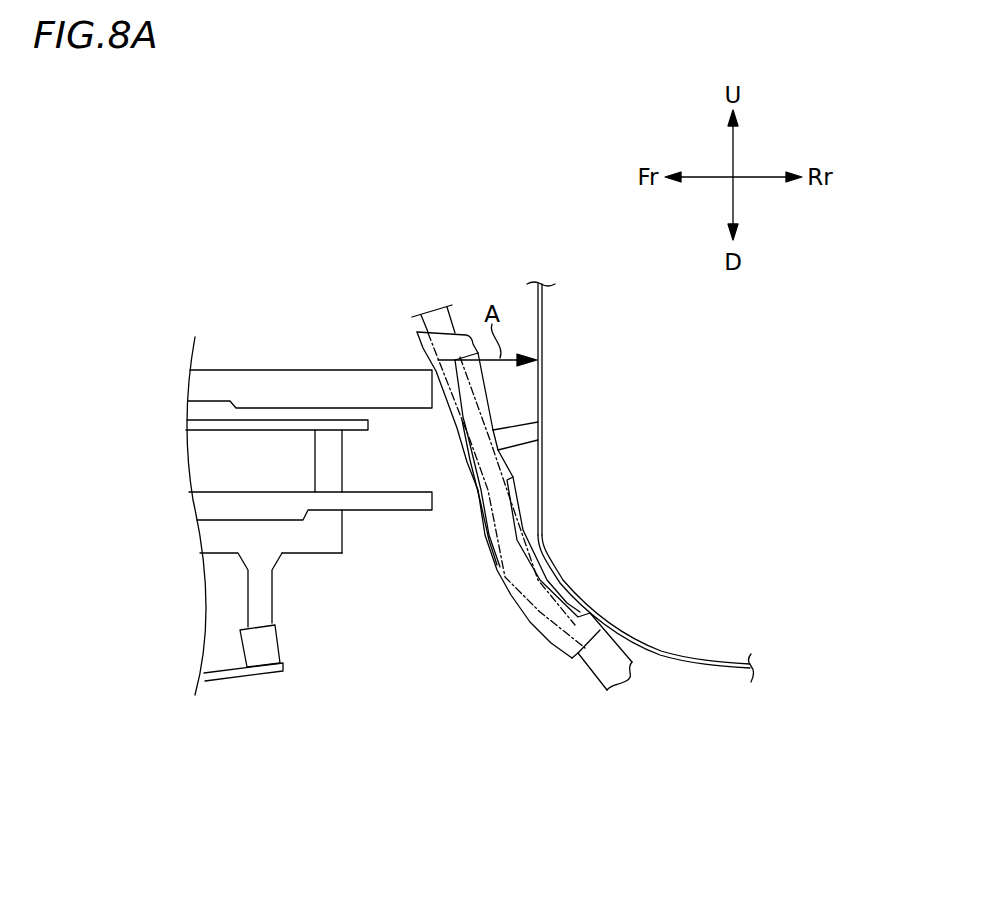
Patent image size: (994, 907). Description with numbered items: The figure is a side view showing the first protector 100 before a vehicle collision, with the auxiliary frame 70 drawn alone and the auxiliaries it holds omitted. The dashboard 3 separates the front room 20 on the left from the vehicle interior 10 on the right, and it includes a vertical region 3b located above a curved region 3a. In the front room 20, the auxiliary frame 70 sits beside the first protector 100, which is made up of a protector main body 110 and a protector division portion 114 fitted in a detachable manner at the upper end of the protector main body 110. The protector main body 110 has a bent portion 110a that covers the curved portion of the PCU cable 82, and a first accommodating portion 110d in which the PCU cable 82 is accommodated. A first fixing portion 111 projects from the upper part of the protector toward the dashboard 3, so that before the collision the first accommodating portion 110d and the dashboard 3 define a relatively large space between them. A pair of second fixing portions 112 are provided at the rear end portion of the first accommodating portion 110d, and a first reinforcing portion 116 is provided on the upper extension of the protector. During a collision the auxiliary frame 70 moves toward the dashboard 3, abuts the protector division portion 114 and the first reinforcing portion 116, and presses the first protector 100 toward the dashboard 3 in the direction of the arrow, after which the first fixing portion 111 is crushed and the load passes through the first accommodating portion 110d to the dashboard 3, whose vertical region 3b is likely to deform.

The dashboard 3 is at (640, 482).
The curved region 3a is at (548, 547).
The vertical region 3b is at (543, 385).
The vehicle interior 10 is at (690, 421).
The front room 20 is at (425, 616).
The auxiliary frame 70 is at (319, 560).
The PCU cable 82 is at (505, 523).
The first protector 100 is at (410, 346).
The protector main body 110 is at (477, 405).
The bent portion 110a is at (498, 568).
The first accommodating portion 110d is at (550, 612).
The first fixing portion 111 is at (520, 450).
The second fixing portion 112 is at (592, 618).
The protector division portion 114 is at (443, 342).
The first reinforcing portion 116 is at (488, 534).